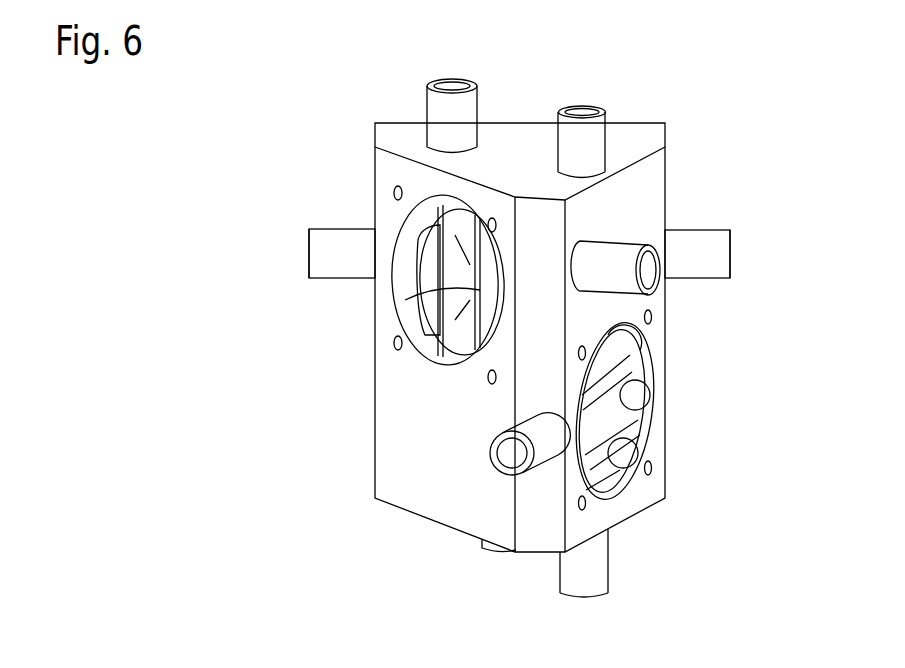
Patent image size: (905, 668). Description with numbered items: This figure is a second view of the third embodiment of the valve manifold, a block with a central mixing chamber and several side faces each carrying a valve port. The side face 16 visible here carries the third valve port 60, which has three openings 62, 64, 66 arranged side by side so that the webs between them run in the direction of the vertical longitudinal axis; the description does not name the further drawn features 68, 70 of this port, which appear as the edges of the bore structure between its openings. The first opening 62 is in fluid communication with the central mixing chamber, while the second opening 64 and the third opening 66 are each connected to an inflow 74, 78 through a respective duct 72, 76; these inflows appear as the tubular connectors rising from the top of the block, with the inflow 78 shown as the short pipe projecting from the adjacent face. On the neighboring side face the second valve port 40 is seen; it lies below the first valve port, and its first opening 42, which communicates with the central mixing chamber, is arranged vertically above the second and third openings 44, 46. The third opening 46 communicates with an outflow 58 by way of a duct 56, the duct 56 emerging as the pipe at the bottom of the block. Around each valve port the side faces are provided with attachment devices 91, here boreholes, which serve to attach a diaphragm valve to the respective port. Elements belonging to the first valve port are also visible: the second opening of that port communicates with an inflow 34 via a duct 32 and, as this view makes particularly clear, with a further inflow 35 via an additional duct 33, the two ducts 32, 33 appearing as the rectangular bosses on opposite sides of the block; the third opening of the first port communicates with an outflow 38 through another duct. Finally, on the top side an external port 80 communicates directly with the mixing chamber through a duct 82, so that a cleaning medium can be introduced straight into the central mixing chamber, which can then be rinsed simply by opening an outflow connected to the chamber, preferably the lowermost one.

The side face 16 is at (388, 170).
The duct 32 is at (697, 267).
The additional duct 33 is at (340, 250).
The inflow 34 is at (730, 253).
The further inflow 35 is at (309, 259).
The outflow 38 is at (485, 548).
The second valve port 40 is at (618, 500).
The first opening 42 is at (613, 345).
The second opening 44 is at (600, 398).
The third opening 46 is at (613, 467).
The duct 56 is at (578, 583).
The outflow 58 is at (585, 600).
The third valve port 60 is at (393, 311).
The first opening 62 is at (473, 312).
The second opening 64 is at (415, 243).
The third opening 66 is at (437, 357).
The ring edge 68 is at (440, 278).
The slot 70 is at (448, 333).
The duct 72 is at (440, 106).
The inflow 74 is at (450, 85).
The duct 76 is at (605, 255).
The inflow 78 is at (645, 268).
The external port 80 is at (592, 132).
The duct 82 is at (578, 111).
The attachment devices 91 is at (487, 381).